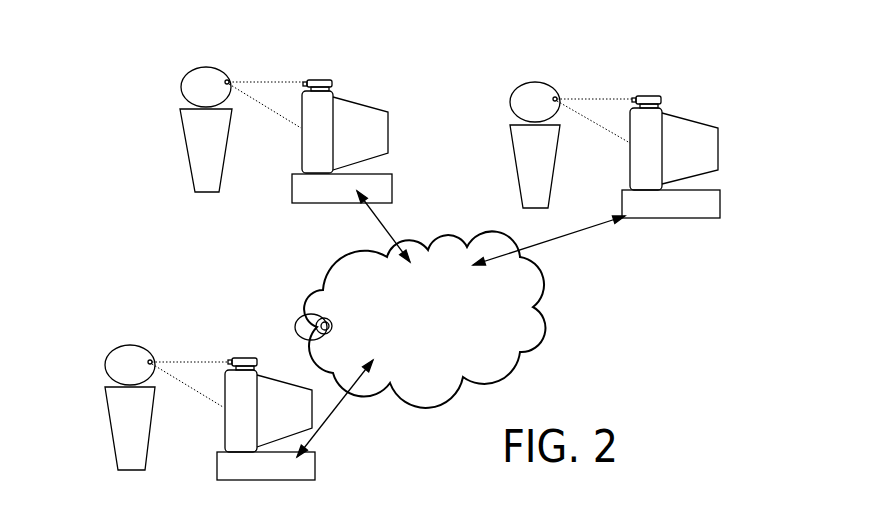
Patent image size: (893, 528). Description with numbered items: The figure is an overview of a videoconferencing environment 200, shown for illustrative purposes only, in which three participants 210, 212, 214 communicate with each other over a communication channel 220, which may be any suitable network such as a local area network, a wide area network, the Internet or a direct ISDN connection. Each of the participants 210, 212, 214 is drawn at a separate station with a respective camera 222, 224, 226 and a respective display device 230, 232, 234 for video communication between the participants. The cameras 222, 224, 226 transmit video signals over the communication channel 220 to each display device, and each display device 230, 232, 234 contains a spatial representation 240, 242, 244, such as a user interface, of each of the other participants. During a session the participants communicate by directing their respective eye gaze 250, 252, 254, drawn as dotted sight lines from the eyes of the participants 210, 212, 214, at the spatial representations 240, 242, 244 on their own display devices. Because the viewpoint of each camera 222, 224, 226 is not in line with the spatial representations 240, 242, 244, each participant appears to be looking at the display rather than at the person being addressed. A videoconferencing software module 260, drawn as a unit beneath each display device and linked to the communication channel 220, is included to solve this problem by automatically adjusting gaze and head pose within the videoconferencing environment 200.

The videoconferencing environment 200 is at (688, 78).
The participant 210 is at (207, 183).
The participant 212 is at (526, 188).
The participant 214 is at (127, 462).
The communication channel 220 is at (533, 328).
The camera 222 is at (323, 79).
The camera 224 is at (652, 96).
The camera 226 is at (247, 358).
The display device 230 is at (375, 113).
The display device 232 is at (706, 132).
The display device 234 is at (277, 388).
The spatial representation 240 is at (305, 140).
The spatial representation 242 is at (635, 157).
The spatial representation 244 is at (232, 438).
The eye gaze 250 is at (230, 78).
The eye gaze 252 is at (558, 95).
The eye gaze 254 is at (152, 357).
The videoconferencing software module 260 is at (343, 198).